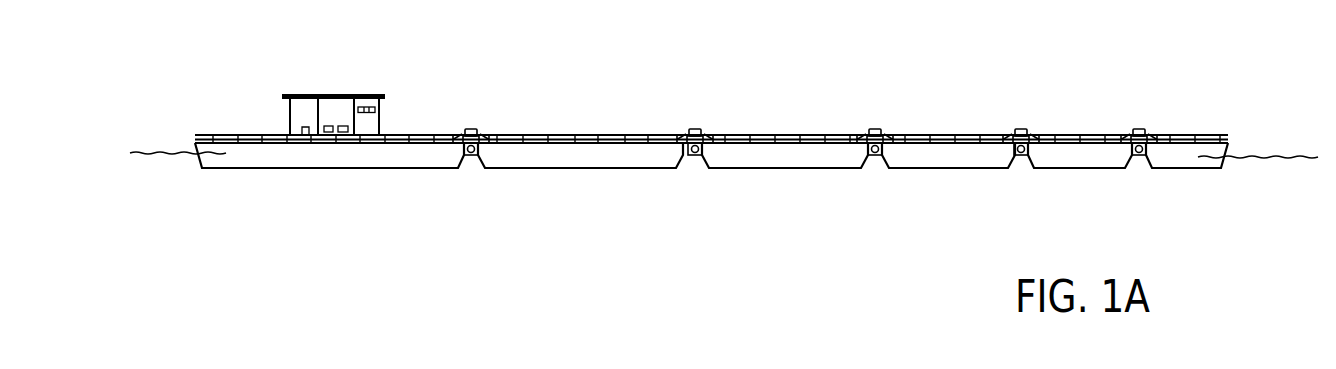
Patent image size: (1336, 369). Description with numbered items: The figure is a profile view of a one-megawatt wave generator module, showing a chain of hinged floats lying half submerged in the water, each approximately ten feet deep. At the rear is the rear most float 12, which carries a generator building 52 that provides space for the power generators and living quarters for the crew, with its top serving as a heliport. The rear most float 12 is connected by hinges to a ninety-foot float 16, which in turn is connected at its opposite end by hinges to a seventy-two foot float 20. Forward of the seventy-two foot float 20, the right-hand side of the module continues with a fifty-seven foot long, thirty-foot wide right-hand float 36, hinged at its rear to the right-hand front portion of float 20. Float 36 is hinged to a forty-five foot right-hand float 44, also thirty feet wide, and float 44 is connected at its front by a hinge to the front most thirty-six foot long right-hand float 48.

The rear most float 12 is at (329, 157).
The generator building 52 is at (340, 105).
The 90-foot float 16 is at (627, 160).
The 72-foot float 20 is at (830, 160).
The right-hand 57-foot float 36 is at (993, 160).
The 45-foot right-hand float 44 is at (1087, 160).
The front most 36-foot right-hand float 48 is at (1200, 163).